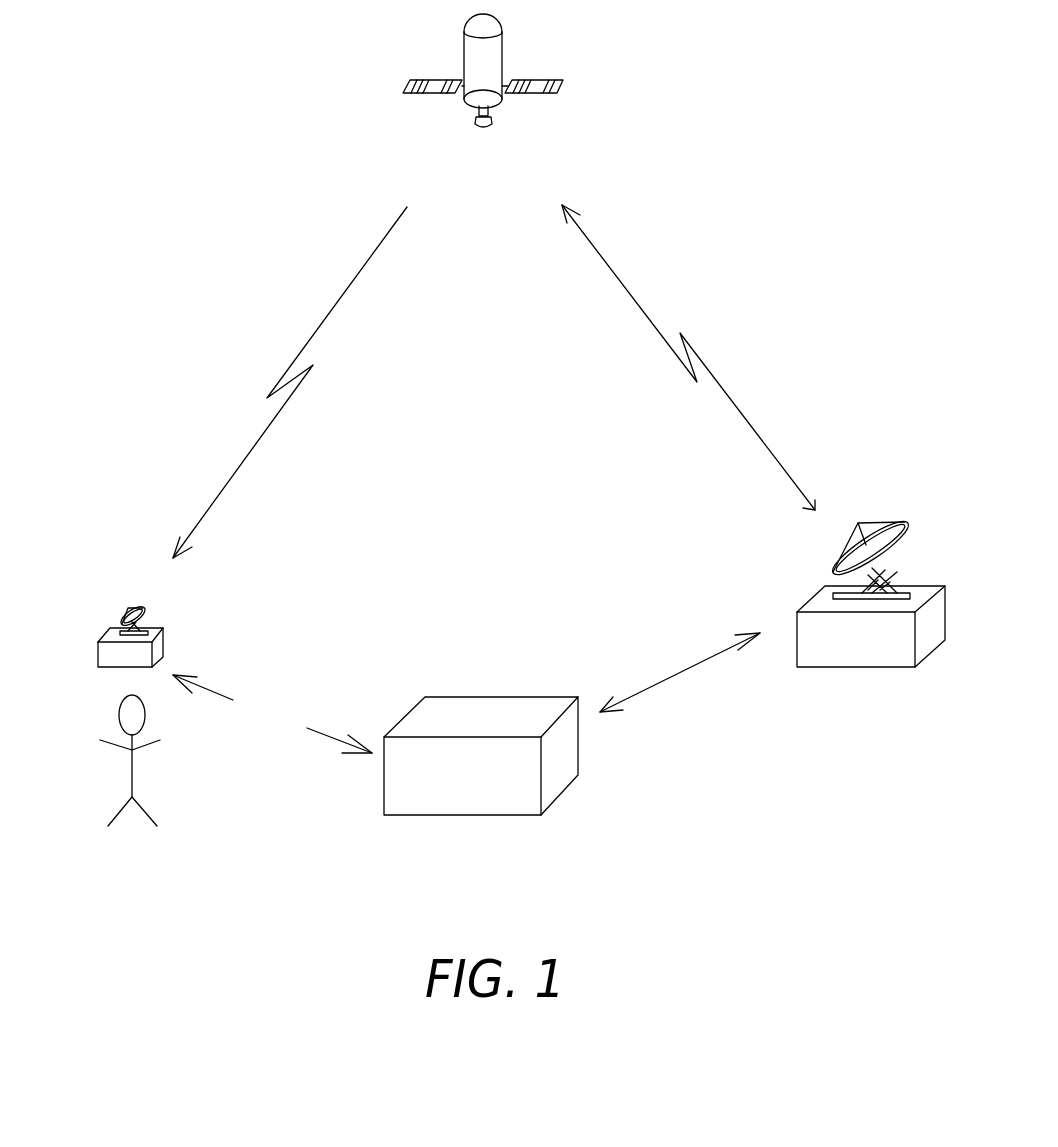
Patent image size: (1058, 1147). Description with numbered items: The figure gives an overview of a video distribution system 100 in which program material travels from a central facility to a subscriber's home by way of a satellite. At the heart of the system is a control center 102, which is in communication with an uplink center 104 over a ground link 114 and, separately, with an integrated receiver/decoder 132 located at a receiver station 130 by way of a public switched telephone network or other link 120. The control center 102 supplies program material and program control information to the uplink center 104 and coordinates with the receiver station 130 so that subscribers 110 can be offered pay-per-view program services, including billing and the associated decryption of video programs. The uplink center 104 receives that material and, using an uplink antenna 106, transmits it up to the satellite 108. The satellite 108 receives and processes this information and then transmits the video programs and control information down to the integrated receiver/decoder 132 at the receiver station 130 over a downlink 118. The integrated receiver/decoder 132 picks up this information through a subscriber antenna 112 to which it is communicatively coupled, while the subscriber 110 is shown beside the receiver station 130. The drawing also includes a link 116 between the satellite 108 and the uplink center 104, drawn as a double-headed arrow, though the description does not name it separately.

The video distribution system 100 is at (784, 247).
The control center 102 is at (553, 798).
The uplink center 104 is at (850, 668).
The uplink antenna 106 is at (912, 528).
The satellite 108 is at (531, 93).
The subscriber 110 is at (158, 767).
The subscriber antenna 112 is at (128, 607).
The ground link 114 is at (675, 672).
The satellite-gateway link 116 is at (733, 400).
The downlink 118 is at (340, 300).
The public switched telephone network or other link 120 is at (305, 685).
The receiver station 130 is at (185, 615).
The integrated receiver/decoder (IRD) 132 is at (98, 653).